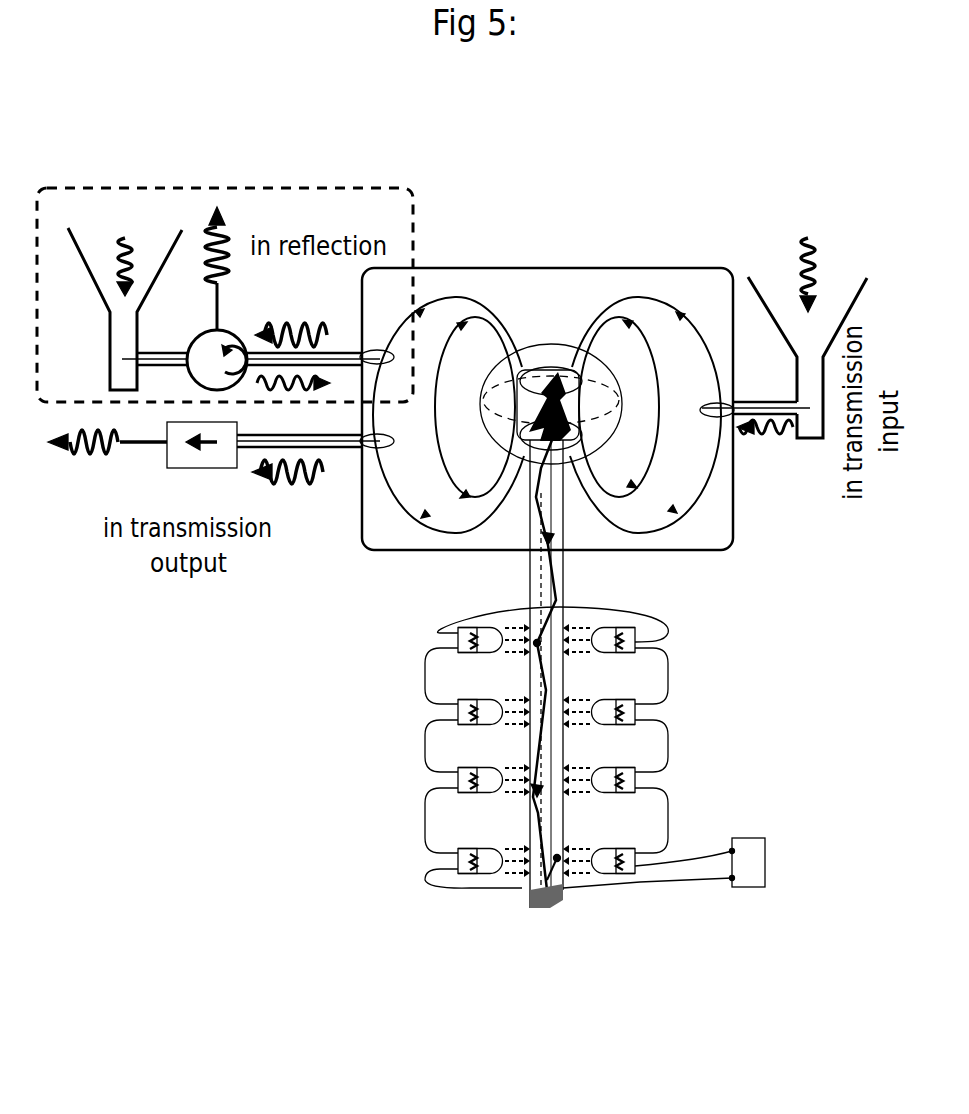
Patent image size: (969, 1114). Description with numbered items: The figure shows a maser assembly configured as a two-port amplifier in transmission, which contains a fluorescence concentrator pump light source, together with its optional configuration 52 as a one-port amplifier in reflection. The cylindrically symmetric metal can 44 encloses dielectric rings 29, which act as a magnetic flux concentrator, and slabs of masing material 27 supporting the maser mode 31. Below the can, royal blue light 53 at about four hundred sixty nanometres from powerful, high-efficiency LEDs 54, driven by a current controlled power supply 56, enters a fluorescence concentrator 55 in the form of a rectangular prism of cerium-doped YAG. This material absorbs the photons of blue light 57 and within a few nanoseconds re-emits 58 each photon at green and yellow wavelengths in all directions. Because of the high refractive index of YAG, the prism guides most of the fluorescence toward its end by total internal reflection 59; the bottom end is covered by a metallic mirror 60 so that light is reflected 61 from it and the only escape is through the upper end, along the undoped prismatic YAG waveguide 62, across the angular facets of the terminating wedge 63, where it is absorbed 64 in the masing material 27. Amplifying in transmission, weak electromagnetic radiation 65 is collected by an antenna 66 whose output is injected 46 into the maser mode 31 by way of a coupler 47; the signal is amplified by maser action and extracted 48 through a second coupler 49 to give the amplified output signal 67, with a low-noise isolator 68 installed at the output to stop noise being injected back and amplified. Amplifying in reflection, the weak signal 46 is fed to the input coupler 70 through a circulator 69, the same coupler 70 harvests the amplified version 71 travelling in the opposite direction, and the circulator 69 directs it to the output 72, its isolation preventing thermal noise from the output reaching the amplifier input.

The masing material 27 is at (528, 392).
The dielectric rings 29 is at (548, 345).
The maser mode 31 is at (652, 472).
The metal can 44 is at (575, 268).
The injected signal 46 is at (310, 393).
The coupler 47 is at (717, 404).
The extracted signal 48 is at (328, 478).
The second coupler 49 is at (372, 452).
The configuration as amplifier in reflection 52 is at (200, 187).
The royal blue light 53 is at (575, 768).
The LEDs 54 is at (622, 850).
The fluorescence concentrator 55 is at (530, 672).
The current controlled power supply 56 is at (765, 845).
The photons of blue light 57 is at (565, 845).
The re-emission 58 is at (565, 880).
The total internal reflection 59 is at (560, 597).
The metallic mirror 60 is at (548, 903).
The reflection from mirror 61 is at (532, 896).
The undoped prismatic YAG waveguide 62 is at (560, 535).
The terminating wedge 63 is at (528, 443).
The absorption 64 is at (568, 392).
The weak electromagnetic radiation 65 is at (128, 250).
The antenna 66 is at (860, 282).
The amplified output signal 67 is at (80, 452).
The low-noise isolator 68 is at (210, 470).
The circulator 69 is at (234, 334).
The input coupler 70 is at (378, 350).
The amplified version of input signal 71 is at (300, 322).
The output 72 is at (225, 235).